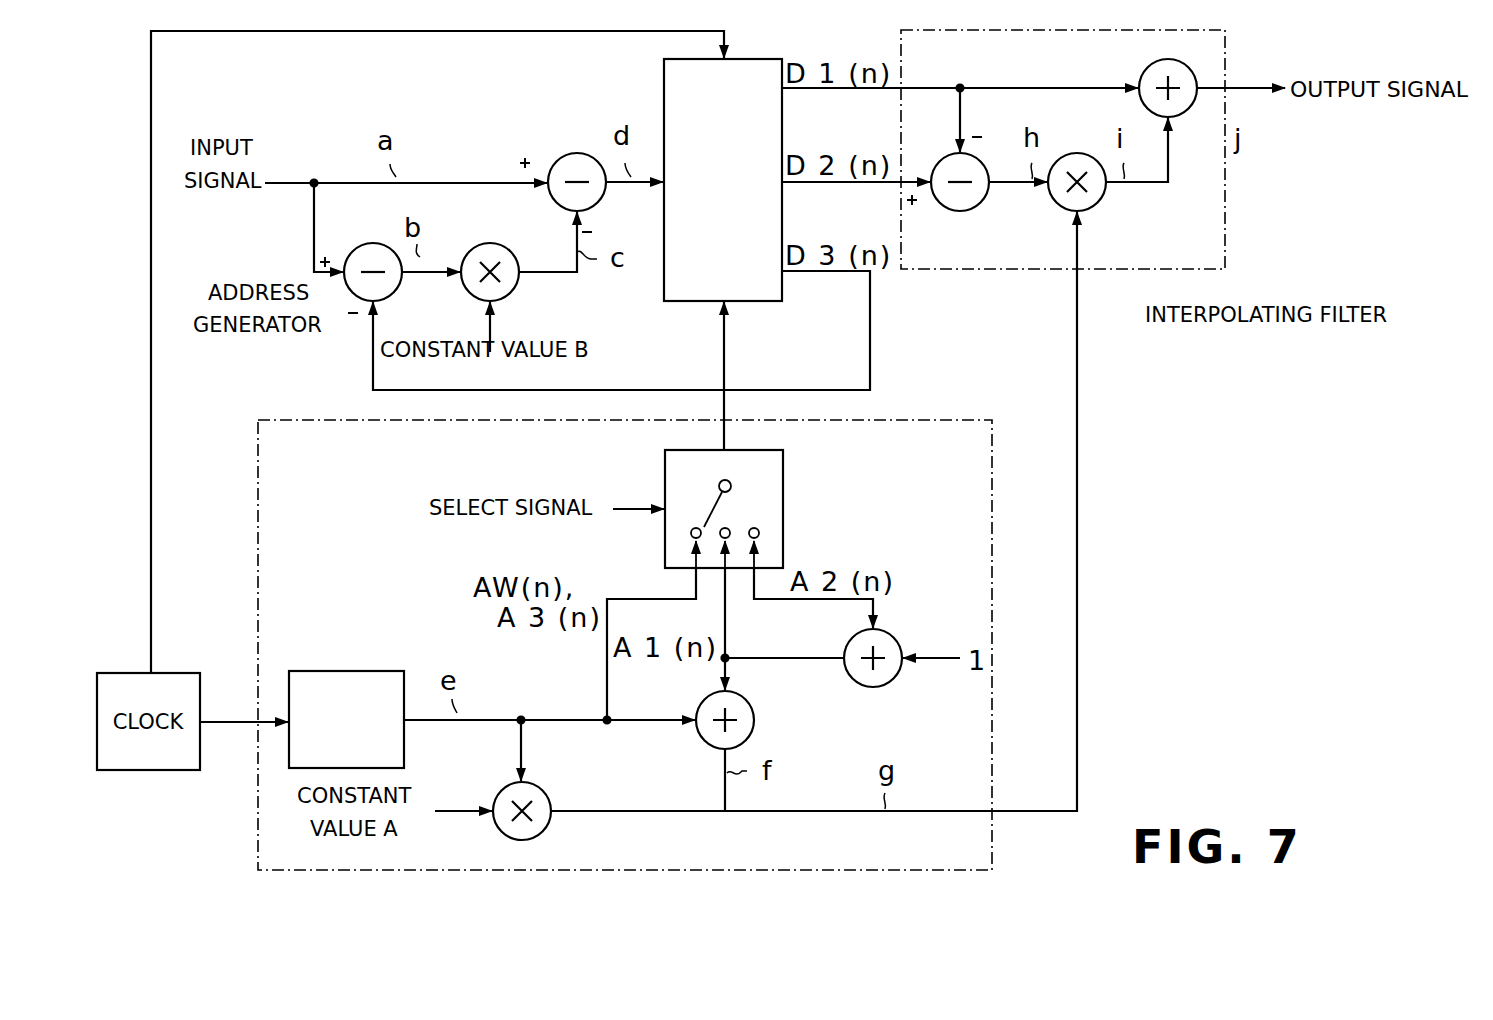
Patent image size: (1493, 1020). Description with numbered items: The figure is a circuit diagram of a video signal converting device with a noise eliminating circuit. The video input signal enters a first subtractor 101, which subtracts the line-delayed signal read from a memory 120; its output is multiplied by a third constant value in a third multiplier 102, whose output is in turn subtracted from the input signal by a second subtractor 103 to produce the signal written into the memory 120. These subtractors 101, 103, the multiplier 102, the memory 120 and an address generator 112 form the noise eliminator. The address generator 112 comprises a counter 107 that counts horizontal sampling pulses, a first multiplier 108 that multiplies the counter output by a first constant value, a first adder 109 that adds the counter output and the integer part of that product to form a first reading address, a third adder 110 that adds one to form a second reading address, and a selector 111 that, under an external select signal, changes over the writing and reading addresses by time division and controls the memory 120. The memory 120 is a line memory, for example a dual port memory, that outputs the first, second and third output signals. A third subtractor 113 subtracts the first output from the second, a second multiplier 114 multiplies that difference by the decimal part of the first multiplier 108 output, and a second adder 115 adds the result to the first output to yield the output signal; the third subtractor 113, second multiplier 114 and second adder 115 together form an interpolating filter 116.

The first subtractor 101 is at (368, 243).
The third multiplier 102 is at (490, 243).
The second subtractor 103 is at (576, 152).
The counter 107 is at (323, 670).
The first multiplier 108 is at (542, 785).
The first adder 109 is at (755, 714).
The third adder 110 is at (892, 635).
The selector 111 is at (783, 470).
The address generator 112 is at (284, 420).
The third subtractor 113 is at (978, 203).
The second multiplier 114 is at (1097, 203).
The second adder 115 is at (1146, 71).
The interpolating filter 116 is at (1197, 269).
The memory 120 is at (663, 80).